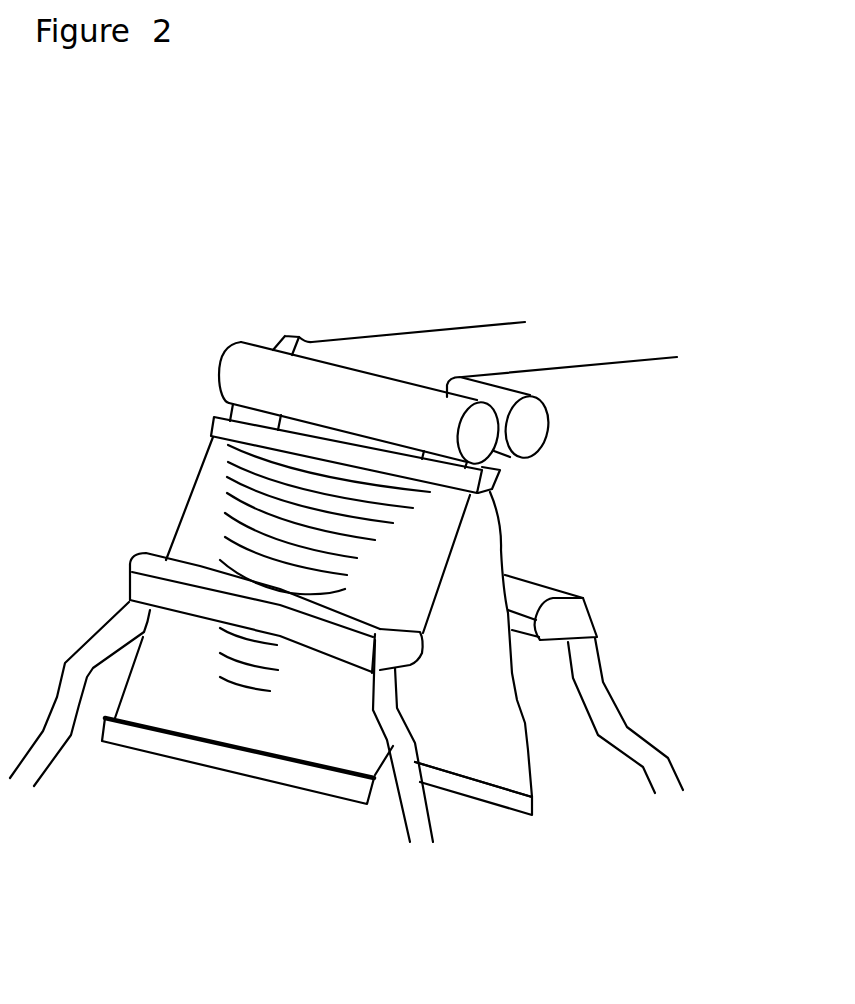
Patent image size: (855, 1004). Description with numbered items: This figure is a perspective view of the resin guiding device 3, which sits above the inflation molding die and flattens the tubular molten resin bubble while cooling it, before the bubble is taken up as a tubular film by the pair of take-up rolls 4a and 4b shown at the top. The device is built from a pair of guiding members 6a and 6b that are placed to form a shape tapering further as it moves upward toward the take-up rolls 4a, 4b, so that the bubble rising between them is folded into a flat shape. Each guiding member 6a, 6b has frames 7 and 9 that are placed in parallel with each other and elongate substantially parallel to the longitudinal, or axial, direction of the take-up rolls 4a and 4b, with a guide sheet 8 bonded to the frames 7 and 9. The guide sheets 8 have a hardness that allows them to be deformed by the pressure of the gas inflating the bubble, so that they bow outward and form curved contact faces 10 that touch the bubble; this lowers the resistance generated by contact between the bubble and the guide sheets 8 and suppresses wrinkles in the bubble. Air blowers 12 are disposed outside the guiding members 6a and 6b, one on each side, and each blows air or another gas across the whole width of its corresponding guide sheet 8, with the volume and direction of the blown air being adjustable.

The resin guiding device 3 is at (166, 455).
The take-up roll 4a is at (231, 363).
The take-up roll 4b is at (286, 335).
The guiding member 6a is at (176, 537).
The guiding member 6b is at (503, 548).
The frame 7 is at (214, 420).
The guide sheet 8 is at (322, 748).
The frame 9 is at (208, 757).
The curved contact face 10 is at (77, 423).
The air blower 12 is at (130, 576).